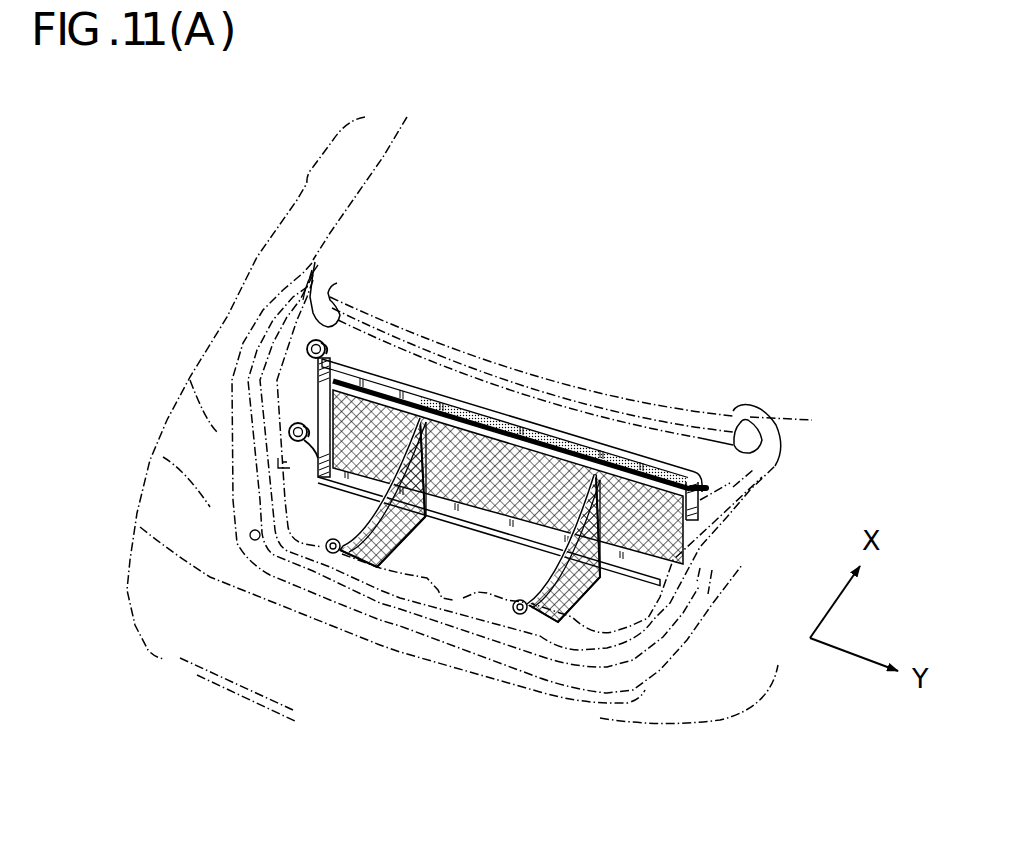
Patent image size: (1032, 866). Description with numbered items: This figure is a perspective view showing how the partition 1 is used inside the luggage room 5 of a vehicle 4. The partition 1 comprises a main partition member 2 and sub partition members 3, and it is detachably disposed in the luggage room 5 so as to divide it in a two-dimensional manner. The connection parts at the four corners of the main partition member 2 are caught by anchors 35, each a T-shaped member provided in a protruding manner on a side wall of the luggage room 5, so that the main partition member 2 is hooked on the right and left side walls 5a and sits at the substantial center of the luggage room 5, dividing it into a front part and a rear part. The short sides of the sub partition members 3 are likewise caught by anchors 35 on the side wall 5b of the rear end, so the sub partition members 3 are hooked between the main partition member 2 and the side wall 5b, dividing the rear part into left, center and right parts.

The partition 1 is at (658, 444).
The main partition member 2 is at (499, 406).
The sub partition members 3 is at (538, 571).
The vehicle 4 is at (229, 279).
The luggage room 5 is at (315, 502).
The right and left side walls 5a is at (286, 357).
The side wall of the rear end 5b is at (556, 627).
The anchor 35 is at (290, 426).